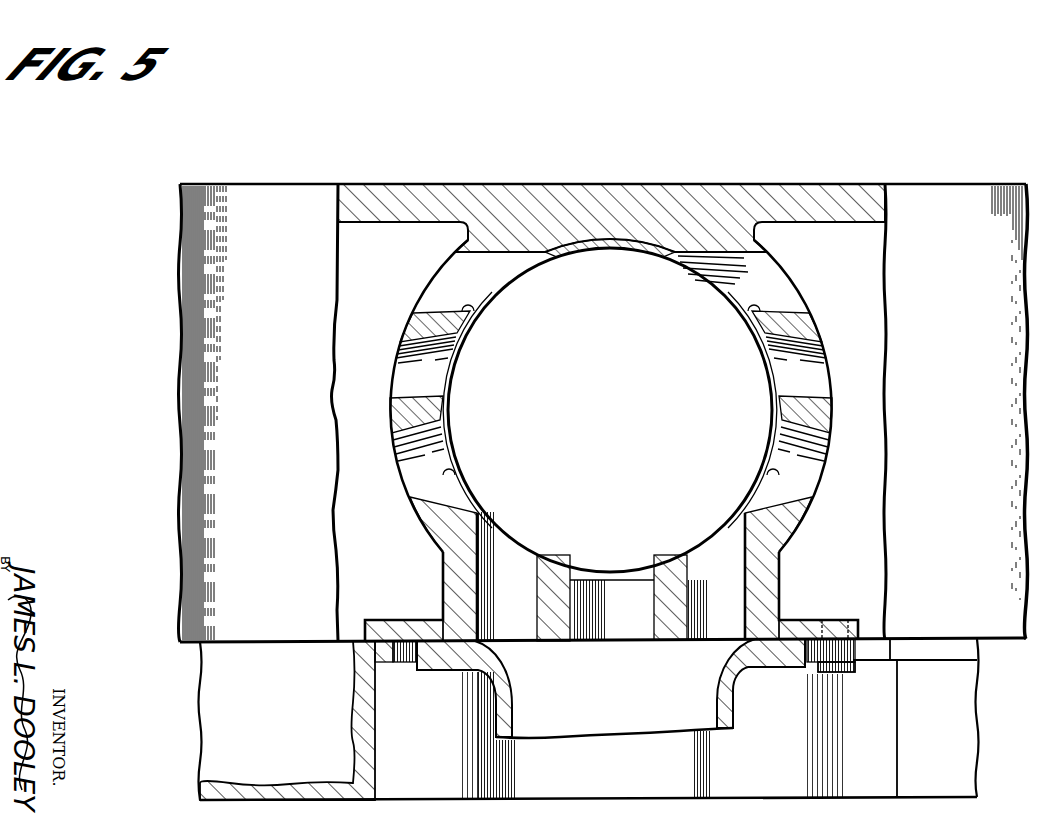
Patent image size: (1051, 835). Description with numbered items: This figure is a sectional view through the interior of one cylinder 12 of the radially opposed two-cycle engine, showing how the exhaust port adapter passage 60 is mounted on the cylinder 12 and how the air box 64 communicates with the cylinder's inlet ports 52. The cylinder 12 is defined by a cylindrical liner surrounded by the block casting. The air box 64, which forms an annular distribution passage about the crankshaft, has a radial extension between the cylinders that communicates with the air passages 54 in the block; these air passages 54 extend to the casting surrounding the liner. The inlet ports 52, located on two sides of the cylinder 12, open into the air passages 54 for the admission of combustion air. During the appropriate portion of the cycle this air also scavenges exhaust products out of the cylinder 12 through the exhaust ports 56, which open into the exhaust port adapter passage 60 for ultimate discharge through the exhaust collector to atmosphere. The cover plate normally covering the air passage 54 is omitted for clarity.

The cylinder 12 is at (814, 522).
The inlet ports 52 is at (480, 318).
The air passage 54 is at (338, 226).
The exhaust ports 56 is at (573, 641).
The exhaust port adapter passage 60 is at (738, 695).
The air box 64 is at (333, 800).